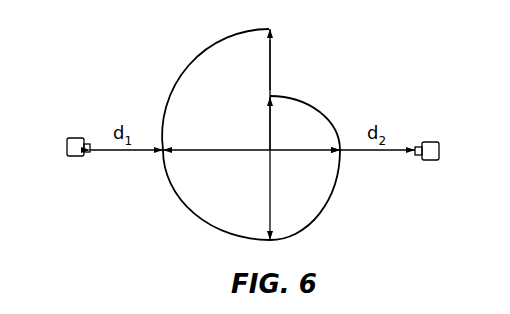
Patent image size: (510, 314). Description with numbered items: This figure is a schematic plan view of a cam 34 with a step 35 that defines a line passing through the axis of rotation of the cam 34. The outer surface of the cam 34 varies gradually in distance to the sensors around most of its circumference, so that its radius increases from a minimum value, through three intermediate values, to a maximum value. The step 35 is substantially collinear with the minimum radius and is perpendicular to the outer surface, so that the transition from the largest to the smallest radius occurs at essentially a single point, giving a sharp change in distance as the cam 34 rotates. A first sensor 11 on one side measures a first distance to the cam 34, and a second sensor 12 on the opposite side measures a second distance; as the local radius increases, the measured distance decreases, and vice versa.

The first sensor 11 is at (72, 156).
The second sensor 12 is at (432, 160).
The cam 34 is at (325, 204).
The step 35 is at (273, 50).